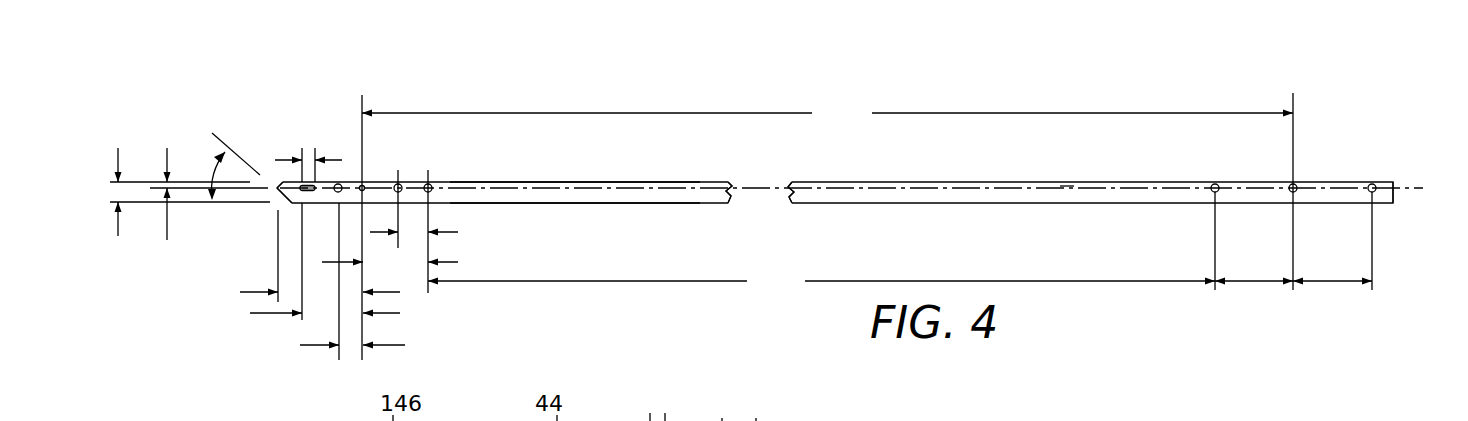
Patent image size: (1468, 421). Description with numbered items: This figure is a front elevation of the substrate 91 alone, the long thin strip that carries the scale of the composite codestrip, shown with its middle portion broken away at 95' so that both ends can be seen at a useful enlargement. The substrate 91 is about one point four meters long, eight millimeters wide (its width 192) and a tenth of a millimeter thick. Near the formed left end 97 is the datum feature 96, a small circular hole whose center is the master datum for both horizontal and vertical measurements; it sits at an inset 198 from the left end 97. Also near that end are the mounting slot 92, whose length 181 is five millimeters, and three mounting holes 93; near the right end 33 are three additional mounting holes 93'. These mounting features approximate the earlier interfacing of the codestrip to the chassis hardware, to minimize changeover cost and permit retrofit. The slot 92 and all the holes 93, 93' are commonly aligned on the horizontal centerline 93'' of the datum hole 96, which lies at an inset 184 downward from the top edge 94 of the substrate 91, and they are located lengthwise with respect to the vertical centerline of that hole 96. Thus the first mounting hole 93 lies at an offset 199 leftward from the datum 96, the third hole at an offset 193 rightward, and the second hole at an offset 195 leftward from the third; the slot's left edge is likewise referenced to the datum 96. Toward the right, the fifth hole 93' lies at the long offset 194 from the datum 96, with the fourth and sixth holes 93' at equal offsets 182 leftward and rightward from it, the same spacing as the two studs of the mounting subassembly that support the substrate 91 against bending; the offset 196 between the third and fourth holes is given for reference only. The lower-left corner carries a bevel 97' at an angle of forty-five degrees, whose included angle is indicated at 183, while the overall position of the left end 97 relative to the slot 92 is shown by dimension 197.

The substrate 91 is at (868, 158).
The top edge of substrate 94 is at (645, 182).
The break in rod length 95' is at (793, 217).
The right end of substrate 33 is at (1395, 205).
The left end of substrate 97 is at (247, 133).
The bevel 97' is at (251, 216).
The bevel angle 183 is at (213, 163).
The mounting slot 92 is at (313, 205).
The datum hole 96 is at (363, 186).
The mounting holes 93 is at (410, 123).
The additional mounting holes 93' is at (1233, 180).
The horizontal centerline of datum hole 93'' is at (1012, 217).
The width of substrate 192 is at (175, 147).
The inset of common centerline 184 is at (190, 224).
The length of mounting slot 181 is at (302, 147).
The offset of fifth mounting hole 194 is at (827, 226).
The offset of second mounting hole 195 is at (436, 231).
The offset of third mounting hole 193 is at (412, 263).
The offset between third and fourth holes 196 is at (821, 244).
The offsets of fourth and sixth mounting holes 182 is at (1293, 251).
The dimension 197 is at (299, 258).
The inset of datum hole from left end 198 is at (348, 265).
The offset of first mounting hole 199 is at (328, 281).